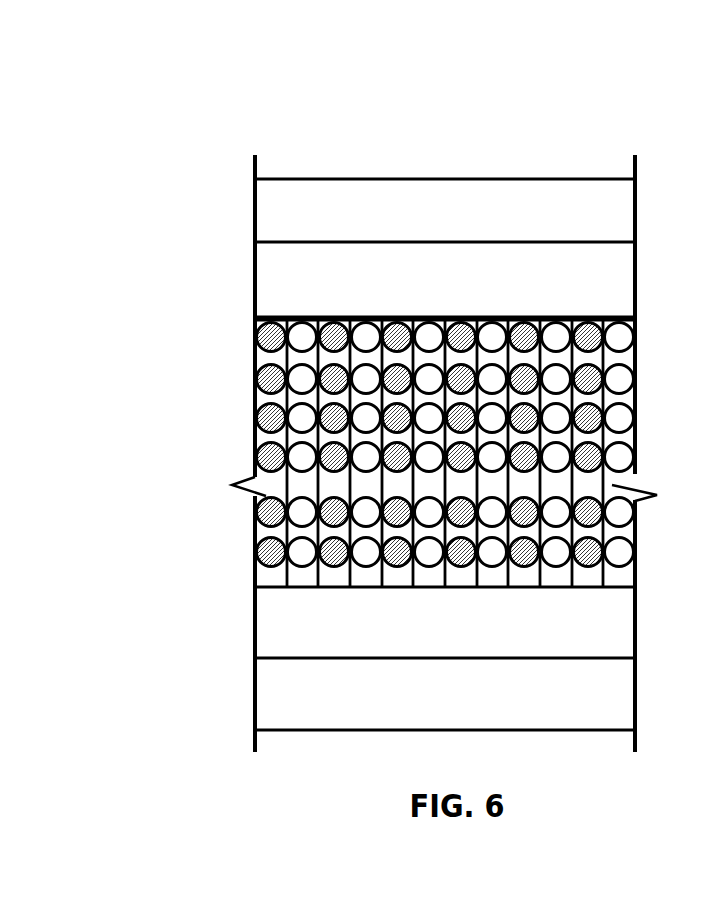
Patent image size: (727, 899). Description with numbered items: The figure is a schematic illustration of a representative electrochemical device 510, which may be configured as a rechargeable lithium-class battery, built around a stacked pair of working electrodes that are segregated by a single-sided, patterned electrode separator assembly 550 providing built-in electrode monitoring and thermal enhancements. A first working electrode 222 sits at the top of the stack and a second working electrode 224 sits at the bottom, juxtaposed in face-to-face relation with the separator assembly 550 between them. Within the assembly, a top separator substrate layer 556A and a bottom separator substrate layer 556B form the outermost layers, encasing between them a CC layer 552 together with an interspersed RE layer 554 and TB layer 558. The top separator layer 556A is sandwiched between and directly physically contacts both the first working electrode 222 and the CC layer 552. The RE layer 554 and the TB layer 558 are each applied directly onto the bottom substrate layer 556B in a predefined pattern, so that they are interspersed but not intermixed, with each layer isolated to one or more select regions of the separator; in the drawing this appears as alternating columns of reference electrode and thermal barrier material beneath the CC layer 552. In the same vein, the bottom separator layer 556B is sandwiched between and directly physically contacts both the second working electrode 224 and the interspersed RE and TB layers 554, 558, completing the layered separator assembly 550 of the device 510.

The electrochemical device 510 is at (172, 65).
The first working electrode 222 is at (257, 191).
The second working electrode 224 is at (256, 693).
The electrode separator assembly 550 is at (361, 333).
The CC layer 552 is at (260, 317).
The RE layer 554 is at (296, 316).
The top separator substrate layer 556A is at (272, 272).
The bottom separator substrate layer 556B is at (266, 622).
The TB layer 558 is at (278, 316).